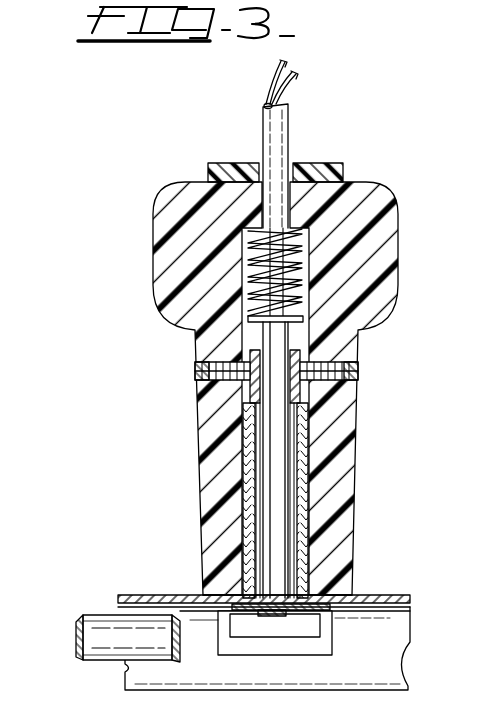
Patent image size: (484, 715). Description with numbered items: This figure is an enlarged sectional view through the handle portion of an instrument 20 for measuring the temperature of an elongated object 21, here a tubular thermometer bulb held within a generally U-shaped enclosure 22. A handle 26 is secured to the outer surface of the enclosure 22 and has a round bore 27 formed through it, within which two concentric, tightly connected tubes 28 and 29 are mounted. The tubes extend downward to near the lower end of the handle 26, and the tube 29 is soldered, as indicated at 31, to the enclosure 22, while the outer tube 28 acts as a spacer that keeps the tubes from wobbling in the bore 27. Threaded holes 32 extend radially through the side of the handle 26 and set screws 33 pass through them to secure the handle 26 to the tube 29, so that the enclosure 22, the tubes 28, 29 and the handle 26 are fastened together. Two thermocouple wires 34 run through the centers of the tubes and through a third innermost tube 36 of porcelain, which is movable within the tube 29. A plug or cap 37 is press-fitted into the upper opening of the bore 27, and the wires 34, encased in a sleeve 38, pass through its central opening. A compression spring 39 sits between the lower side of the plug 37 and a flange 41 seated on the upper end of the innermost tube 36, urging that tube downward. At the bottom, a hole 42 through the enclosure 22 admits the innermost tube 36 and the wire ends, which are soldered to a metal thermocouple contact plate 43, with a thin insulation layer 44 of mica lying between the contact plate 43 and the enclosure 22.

The instrument 20 is at (172, 398).
The elongated object 21 is at (93, 625).
The enclosure 22 is at (165, 595).
The handle 26 is at (398, 262).
The bore 27 is at (318, 281).
The outer tube 28 is at (300, 460).
The tube 29 is at (300, 476).
The solder joint 31 is at (345, 592).
The threaded holes 32 is at (337, 366).
The set screws 33 is at (196, 370).
The thermocouple wires 34 is at (298, 74).
The innermost tube 36 is at (272, 447).
The plug or cap 37 is at (340, 170).
The sleeve 38 is at (277, 136).
The compression spring 39 is at (258, 247).
The flange 41 is at (250, 320).
The hole 42 is at (292, 617).
The thermocouple contact plate 43 is at (250, 622).
The insulation layer 44 is at (335, 628).